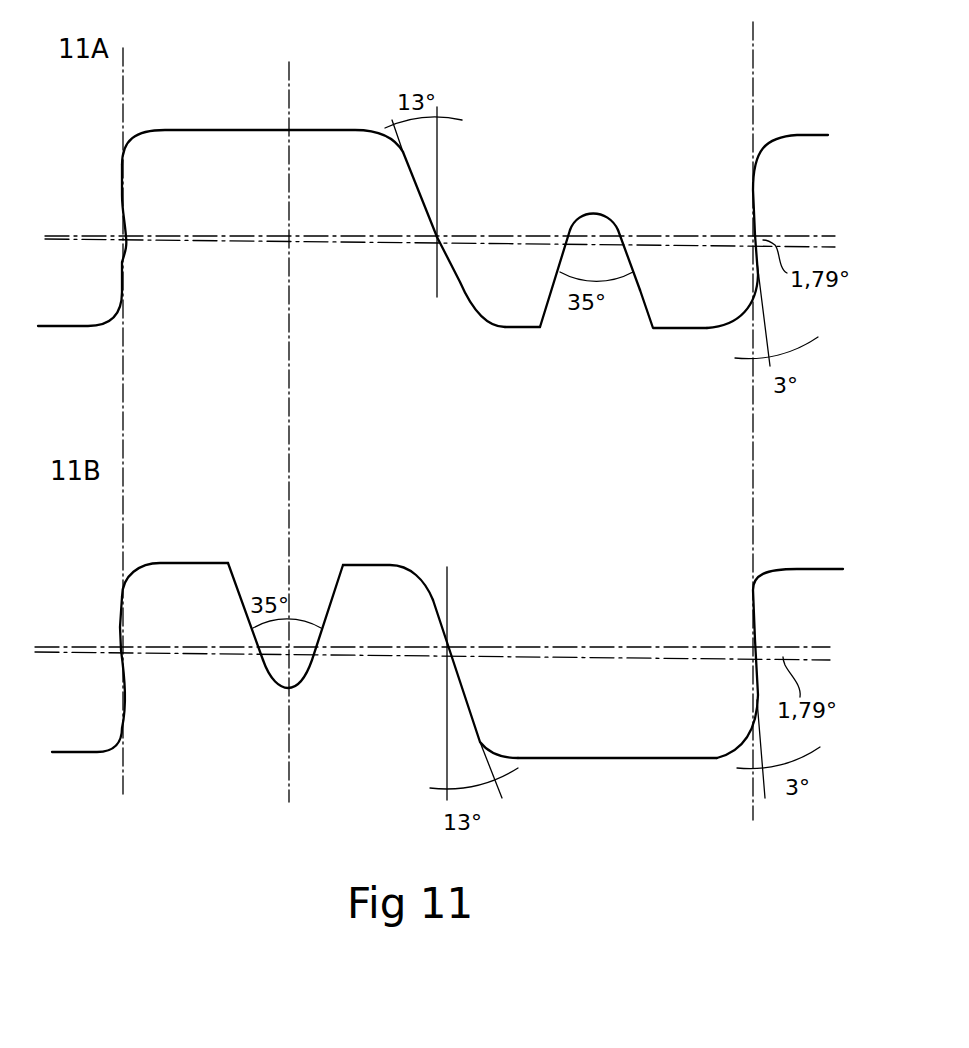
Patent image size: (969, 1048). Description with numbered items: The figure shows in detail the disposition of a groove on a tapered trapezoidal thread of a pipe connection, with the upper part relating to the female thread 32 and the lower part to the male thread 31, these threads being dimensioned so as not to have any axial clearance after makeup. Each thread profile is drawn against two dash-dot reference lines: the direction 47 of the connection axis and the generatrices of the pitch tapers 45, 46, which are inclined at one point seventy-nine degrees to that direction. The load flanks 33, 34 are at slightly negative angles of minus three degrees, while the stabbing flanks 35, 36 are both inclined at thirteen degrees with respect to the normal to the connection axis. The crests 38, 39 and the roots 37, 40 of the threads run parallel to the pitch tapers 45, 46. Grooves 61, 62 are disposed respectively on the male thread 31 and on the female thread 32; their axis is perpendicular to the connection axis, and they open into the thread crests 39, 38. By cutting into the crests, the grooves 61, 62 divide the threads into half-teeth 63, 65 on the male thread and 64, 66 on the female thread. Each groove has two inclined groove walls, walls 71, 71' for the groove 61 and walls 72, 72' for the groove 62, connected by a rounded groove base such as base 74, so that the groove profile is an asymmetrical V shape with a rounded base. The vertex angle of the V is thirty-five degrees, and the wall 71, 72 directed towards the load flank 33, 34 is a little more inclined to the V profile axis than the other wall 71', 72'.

The male thread 31 is at (528, 682).
The female thread 32 is at (522, 304).
The load flank 33 is at (118, 630).
The load flank 34 is at (124, 220).
The stabbing flank 35 is at (433, 623).
The stabbing flank 36 is at (427, 207).
The root 37 is at (617, 757).
The crest 38 is at (515, 330).
The crest 39 is at (203, 562).
The root 40 is at (305, 131).
The pitch taper 45 is at (565, 658).
The pitch taper 46 is at (653, 246).
The direction of the connection axis 47 is at (652, 236).
The groove 61 is at (329, 649).
The groove 62 is at (605, 262).
The half-tooth 63 is at (175, 608).
The half-tooth 64 is at (707, 223).
The half-tooth 65 is at (395, 598).
The half-tooth 66 is at (490, 297).
The groove wall 71 is at (242, 573).
The groove wall 71' is at (329, 649).
The groove wall 72 is at (672, 349).
The groove wall 72' is at (551, 319).
The groove base 74 is at (593, 203).